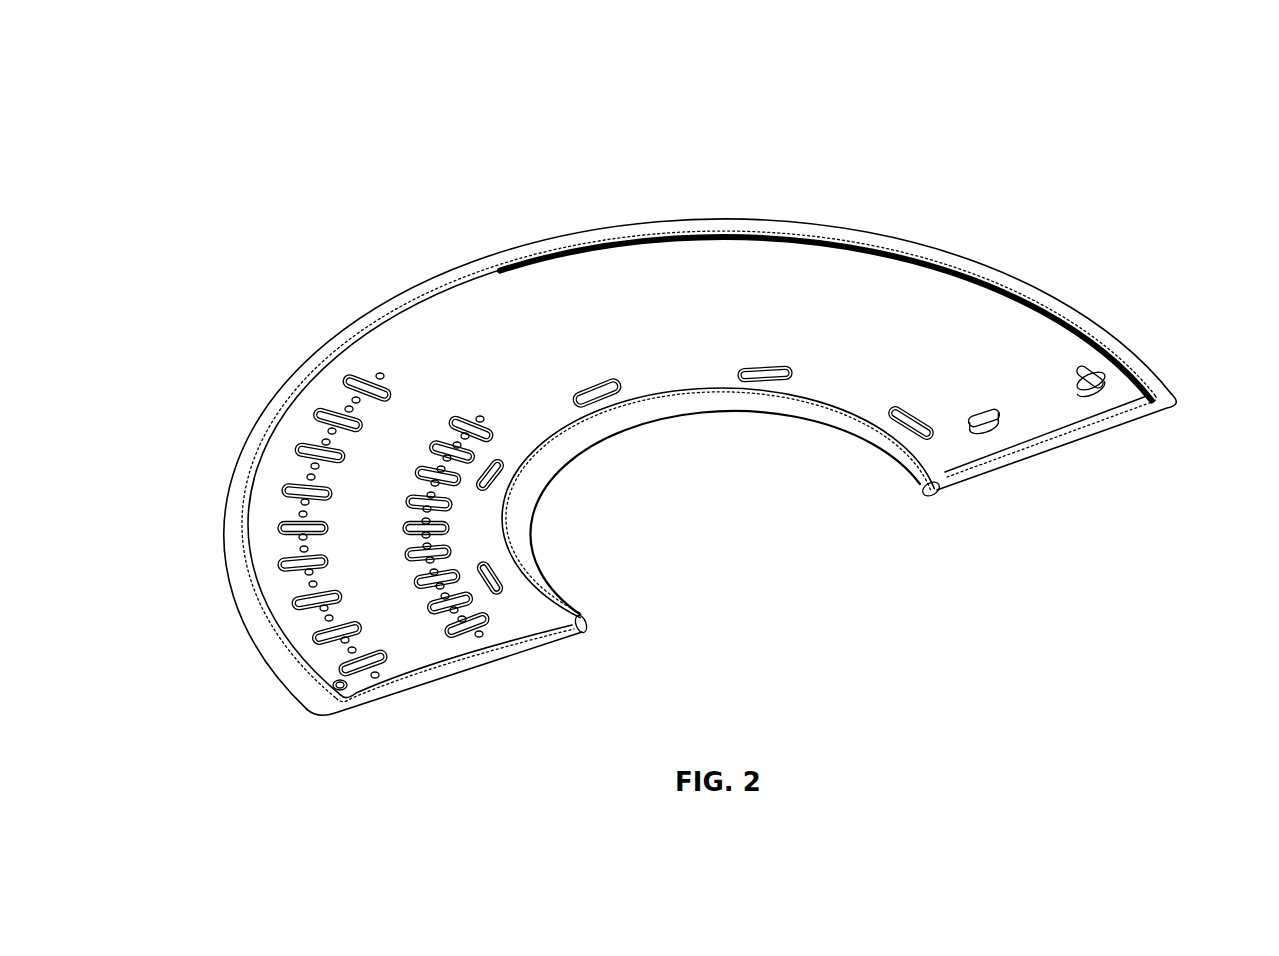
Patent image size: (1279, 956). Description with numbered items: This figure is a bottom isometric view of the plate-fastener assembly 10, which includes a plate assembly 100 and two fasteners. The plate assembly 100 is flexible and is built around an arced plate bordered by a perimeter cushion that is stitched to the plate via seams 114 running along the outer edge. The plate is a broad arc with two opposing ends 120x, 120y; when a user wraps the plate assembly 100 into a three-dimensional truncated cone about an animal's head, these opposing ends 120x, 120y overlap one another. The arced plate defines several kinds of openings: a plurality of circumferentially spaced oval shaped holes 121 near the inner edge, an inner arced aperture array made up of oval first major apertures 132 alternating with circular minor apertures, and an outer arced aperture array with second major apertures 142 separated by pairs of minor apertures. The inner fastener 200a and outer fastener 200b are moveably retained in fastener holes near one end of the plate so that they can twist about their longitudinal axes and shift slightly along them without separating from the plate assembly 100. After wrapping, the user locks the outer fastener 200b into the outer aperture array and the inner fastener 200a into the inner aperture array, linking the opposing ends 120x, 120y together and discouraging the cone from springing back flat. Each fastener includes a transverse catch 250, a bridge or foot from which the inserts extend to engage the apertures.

The plate-fastener assembly 10 is at (288, 143).
The plate assembly 100 is at (679, 170).
The seams 114 is at (347, 343).
The opposing end of arced plate 120x is at (1050, 417).
The opposing end of arced plate 120y is at (419, 647).
The oval shaped holes 121 is at (597, 386).
The first major apertures 132 is at (448, 627).
The second major apertures 142 is at (332, 672).
The inner fastener 200a is at (967, 398).
The outer fastener 200b is at (1071, 362).
The transverse catch 250 is at (1090, 372).